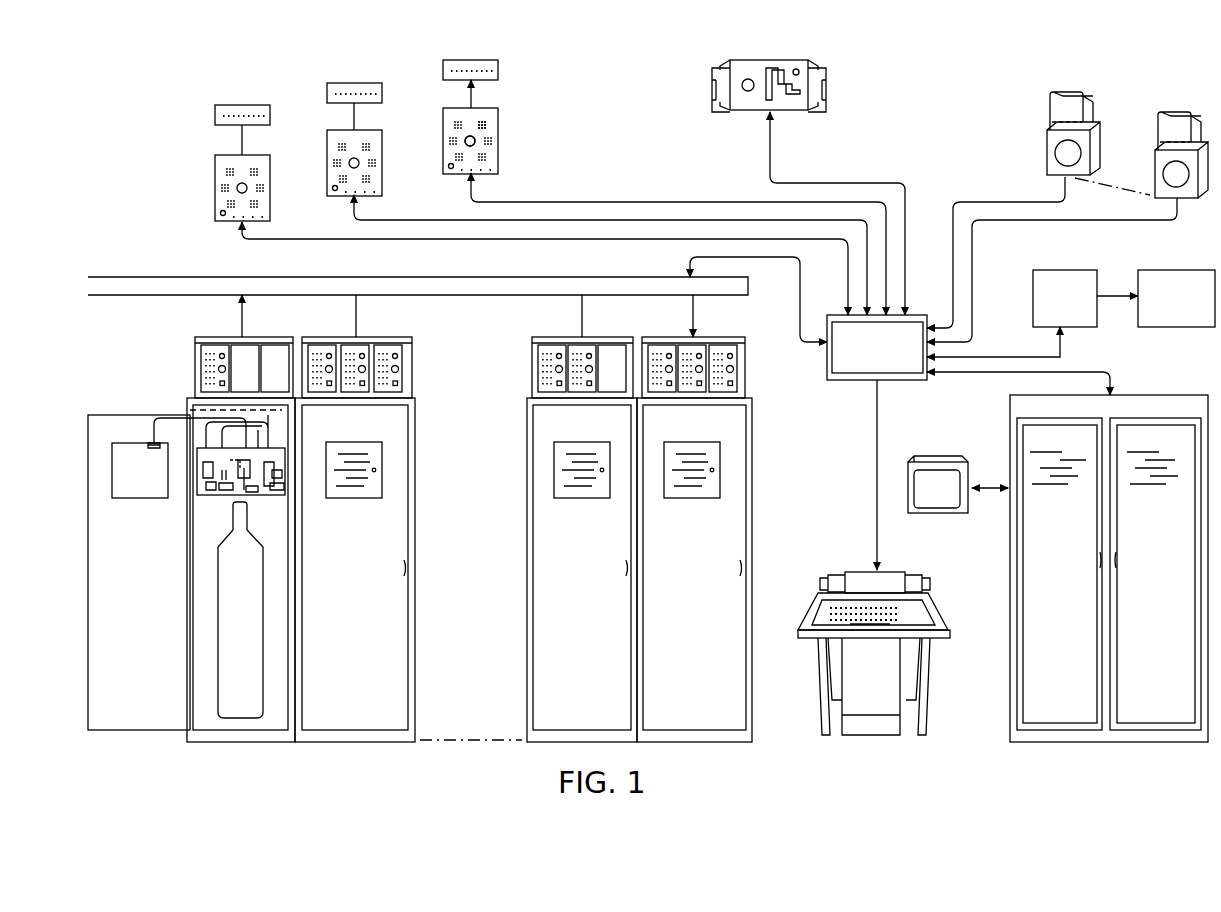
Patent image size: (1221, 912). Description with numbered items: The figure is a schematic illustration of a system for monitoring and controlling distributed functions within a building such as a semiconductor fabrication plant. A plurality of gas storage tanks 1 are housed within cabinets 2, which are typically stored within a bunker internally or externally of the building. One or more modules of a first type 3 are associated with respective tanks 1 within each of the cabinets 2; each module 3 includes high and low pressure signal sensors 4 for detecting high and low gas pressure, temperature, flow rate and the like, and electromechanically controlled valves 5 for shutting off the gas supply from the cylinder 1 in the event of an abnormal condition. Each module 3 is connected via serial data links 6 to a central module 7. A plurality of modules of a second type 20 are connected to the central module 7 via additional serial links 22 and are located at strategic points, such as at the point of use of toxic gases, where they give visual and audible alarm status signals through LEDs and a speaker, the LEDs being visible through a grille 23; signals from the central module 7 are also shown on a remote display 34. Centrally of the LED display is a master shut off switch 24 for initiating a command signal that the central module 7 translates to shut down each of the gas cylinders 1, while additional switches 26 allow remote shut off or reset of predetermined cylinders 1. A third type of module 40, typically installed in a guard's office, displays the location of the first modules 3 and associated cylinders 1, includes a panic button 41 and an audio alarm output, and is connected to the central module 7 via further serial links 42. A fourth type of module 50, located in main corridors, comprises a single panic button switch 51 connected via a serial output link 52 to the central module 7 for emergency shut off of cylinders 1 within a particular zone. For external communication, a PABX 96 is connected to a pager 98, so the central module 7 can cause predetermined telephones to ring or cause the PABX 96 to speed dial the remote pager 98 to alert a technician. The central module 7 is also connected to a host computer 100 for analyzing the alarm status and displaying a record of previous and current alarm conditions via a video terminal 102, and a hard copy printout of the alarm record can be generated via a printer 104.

The gas storage tank 1 is at (228, 615).
The cabinet 2 is at (760, 522).
The first type of module 3 is at (728, 352).
The high and low pressure signal sensor 4 is at (262, 468).
The electromechanically controlled valve 5 is at (224, 492).
The serial data link 6 is at (796, 271).
The central module 7 is at (826, 376).
The module of a second type 20 is at (443, 130).
The serial link 22 is at (652, 208).
The speaker grille 23 is at (490, 120).
The master shut off switch 24 is at (477, 139).
The additional switch 26 is at (512, 180).
The remote display 34 is at (512, 66).
The third type of module 40 is at (830, 75).
The panic button 41 is at (748, 92).
The serial link 42 is at (862, 184).
The fourth type of module 50 is at (1155, 160).
The panic button switch 51 is at (1058, 158).
The serial output link 52 is at (1066, 222).
The PABX 96 is at (1075, 328).
The pager 98 is at (1163, 328).
The host computer 100 is at (1010, 575).
The video terminal 102 is at (943, 460).
The printer 104 is at (948, 622).